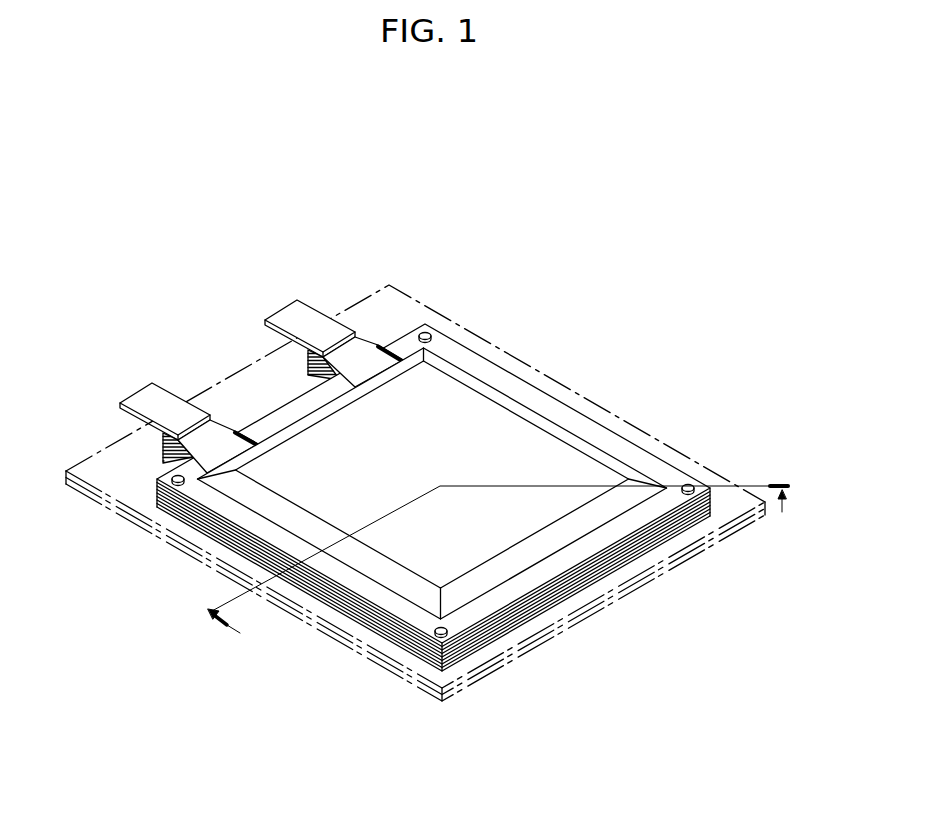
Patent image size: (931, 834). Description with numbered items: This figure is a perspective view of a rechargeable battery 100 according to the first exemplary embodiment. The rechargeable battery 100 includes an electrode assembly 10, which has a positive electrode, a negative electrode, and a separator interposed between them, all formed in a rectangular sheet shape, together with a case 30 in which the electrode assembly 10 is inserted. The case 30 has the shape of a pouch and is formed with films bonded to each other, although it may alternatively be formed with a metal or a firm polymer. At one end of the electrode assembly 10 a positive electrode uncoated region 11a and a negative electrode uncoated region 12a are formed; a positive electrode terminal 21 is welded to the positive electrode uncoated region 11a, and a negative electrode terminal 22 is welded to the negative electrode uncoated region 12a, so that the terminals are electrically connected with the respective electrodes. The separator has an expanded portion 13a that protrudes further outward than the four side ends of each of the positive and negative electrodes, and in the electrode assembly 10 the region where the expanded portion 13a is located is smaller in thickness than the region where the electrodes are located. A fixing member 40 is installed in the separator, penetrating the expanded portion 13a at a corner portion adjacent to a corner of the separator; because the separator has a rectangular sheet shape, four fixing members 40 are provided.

The rechargeable battery 100 is at (394, 184).
The electrode assembly 10 is at (559, 392).
The positive electrode uncoated region 11a is at (212, 433).
The negative electrode uncoated region 12a is at (358, 338).
The expanded portion 13a is at (481, 362).
The positive electrode terminal 21 is at (142, 399).
The negative electrode terminal 22 is at (287, 313).
The case 30 is at (653, 433).
The fixing member 40 is at (694, 480).